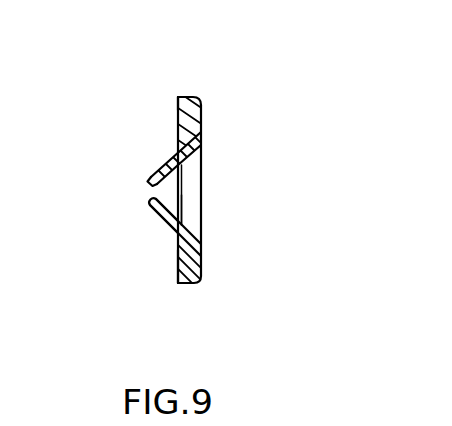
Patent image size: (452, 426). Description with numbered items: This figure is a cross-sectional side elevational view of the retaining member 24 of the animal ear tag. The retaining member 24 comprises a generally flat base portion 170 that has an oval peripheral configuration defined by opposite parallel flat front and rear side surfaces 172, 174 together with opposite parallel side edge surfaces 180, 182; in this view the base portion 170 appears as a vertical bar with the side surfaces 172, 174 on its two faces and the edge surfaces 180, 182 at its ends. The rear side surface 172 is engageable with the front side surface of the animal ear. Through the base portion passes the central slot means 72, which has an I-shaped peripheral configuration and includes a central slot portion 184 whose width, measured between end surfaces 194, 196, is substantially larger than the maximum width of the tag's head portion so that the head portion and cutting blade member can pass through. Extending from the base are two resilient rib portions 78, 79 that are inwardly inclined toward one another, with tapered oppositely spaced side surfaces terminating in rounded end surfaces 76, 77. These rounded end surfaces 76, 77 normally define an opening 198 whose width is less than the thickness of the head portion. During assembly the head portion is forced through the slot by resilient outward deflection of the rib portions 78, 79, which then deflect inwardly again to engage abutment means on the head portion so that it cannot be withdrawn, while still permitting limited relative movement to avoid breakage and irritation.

The retaining member 24 is at (183, 70).
The central slot means 72 is at (203, 182).
The rounded end surface 76 is at (152, 181).
The rounded end surface 77 is at (150, 206).
The resilient rib portion 78 is at (155, 173).
The resilient rib portion 79 is at (168, 223).
The flat base portion 170 is at (178, 107).
The rear side surface 172 is at (201, 110).
The front side surface 174 is at (178, 262).
The side edge surface 180 is at (191, 284).
The side edge surface 182 is at (191, 97).
The central slot portion 184 is at (182, 212).
The end surface 194 is at (201, 145).
The end surface 196 is at (201, 236).
The opening 198 is at (155, 197).